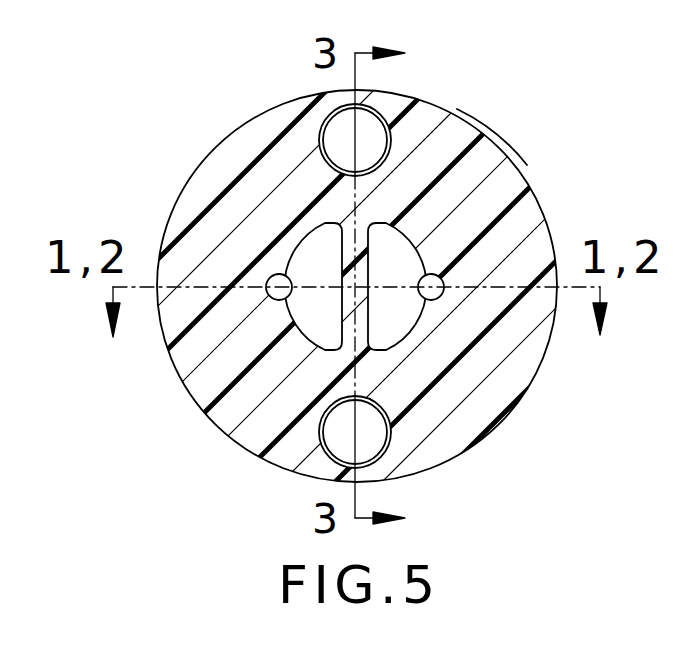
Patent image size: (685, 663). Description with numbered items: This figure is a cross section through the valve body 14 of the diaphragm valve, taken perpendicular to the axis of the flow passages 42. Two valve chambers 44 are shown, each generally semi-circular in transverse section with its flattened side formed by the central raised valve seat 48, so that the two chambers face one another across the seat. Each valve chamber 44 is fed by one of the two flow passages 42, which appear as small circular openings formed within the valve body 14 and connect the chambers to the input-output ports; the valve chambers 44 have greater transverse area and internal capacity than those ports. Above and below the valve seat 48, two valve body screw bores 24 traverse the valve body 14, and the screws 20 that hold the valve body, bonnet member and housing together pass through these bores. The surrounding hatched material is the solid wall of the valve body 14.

The valve body 14 is at (213, 182).
The screws 20 is at (347, 127).
The valve body screw bores 24 is at (380, 113).
The flow passages 42 is at (442, 279).
The valve chambers 44 is at (325, 327).
The valve seat 48 is at (485, 134).